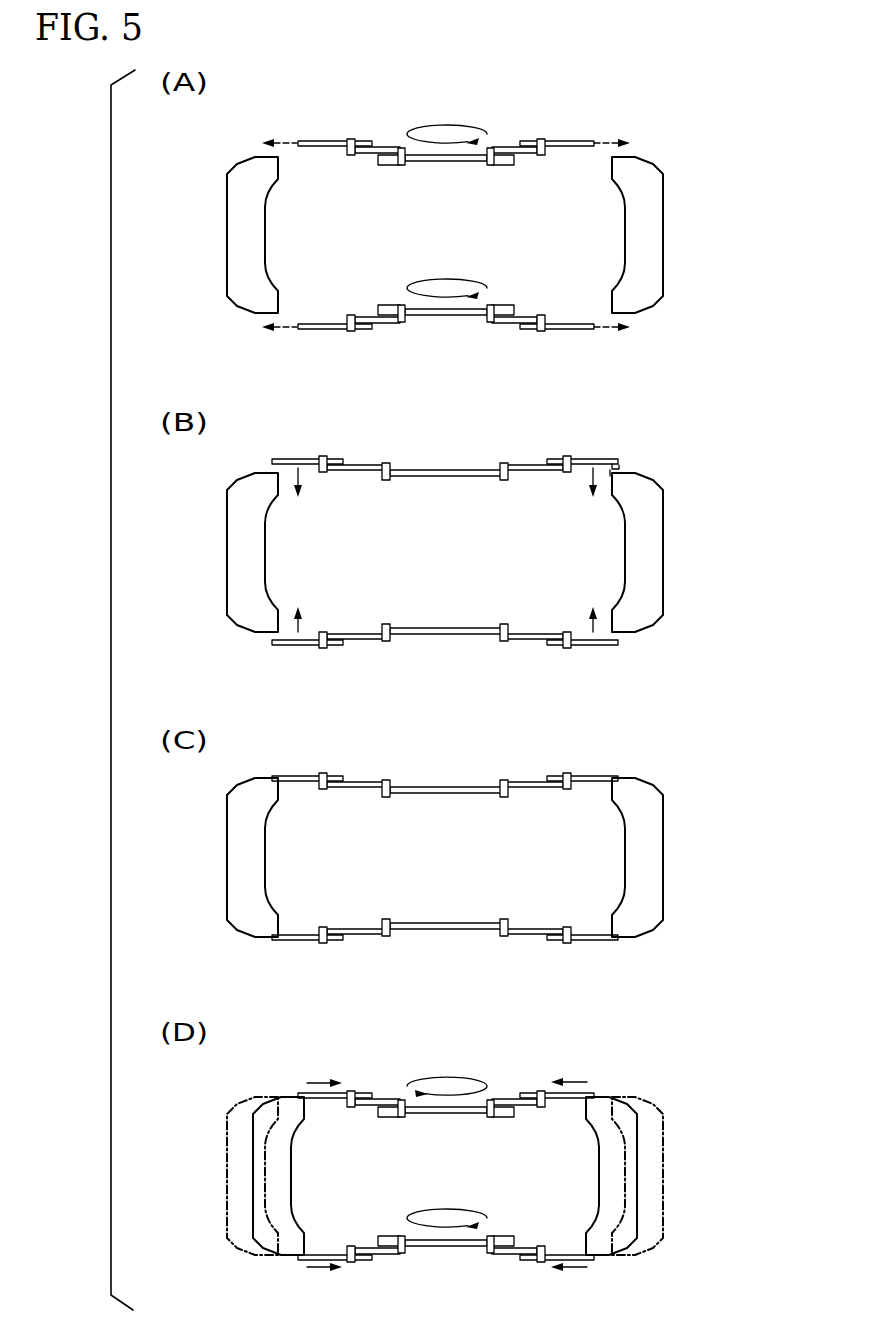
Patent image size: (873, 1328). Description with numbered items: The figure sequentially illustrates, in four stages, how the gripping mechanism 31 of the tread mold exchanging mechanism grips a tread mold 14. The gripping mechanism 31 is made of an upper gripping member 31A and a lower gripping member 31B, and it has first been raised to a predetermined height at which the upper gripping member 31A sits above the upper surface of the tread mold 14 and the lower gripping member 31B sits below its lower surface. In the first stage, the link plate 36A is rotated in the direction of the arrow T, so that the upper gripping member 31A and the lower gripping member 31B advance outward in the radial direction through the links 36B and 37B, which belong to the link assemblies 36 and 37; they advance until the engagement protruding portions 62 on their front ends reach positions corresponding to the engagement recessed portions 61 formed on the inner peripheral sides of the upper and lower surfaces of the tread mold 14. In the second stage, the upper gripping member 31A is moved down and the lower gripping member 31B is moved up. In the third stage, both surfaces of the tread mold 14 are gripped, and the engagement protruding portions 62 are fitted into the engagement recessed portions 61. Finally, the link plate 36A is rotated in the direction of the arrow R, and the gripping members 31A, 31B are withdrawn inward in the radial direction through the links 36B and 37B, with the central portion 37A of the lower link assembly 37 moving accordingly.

The tread mold 14 is at (237, 233).
The gripping mechanism 31 is at (334, 700).
The upper gripping member 31A is at (333, 147).
The lower gripping member 31B is at (310, 746).
The link plate 36 is at (445, 635).
The link plate 36A is at (450, 163).
The link 36B is at (388, 150).
The lower torsion bar 37 is at (445, 809).
The central portion of lower torsion bar 37A is at (450, 313).
The link 37B is at (385, 330).
The engagement recessed portion 61 is at (613, 472).
The engagement protruding portion 62 is at (620, 465).
The arrow T is at (450, 124).
The arrow R is at (450, 1074).